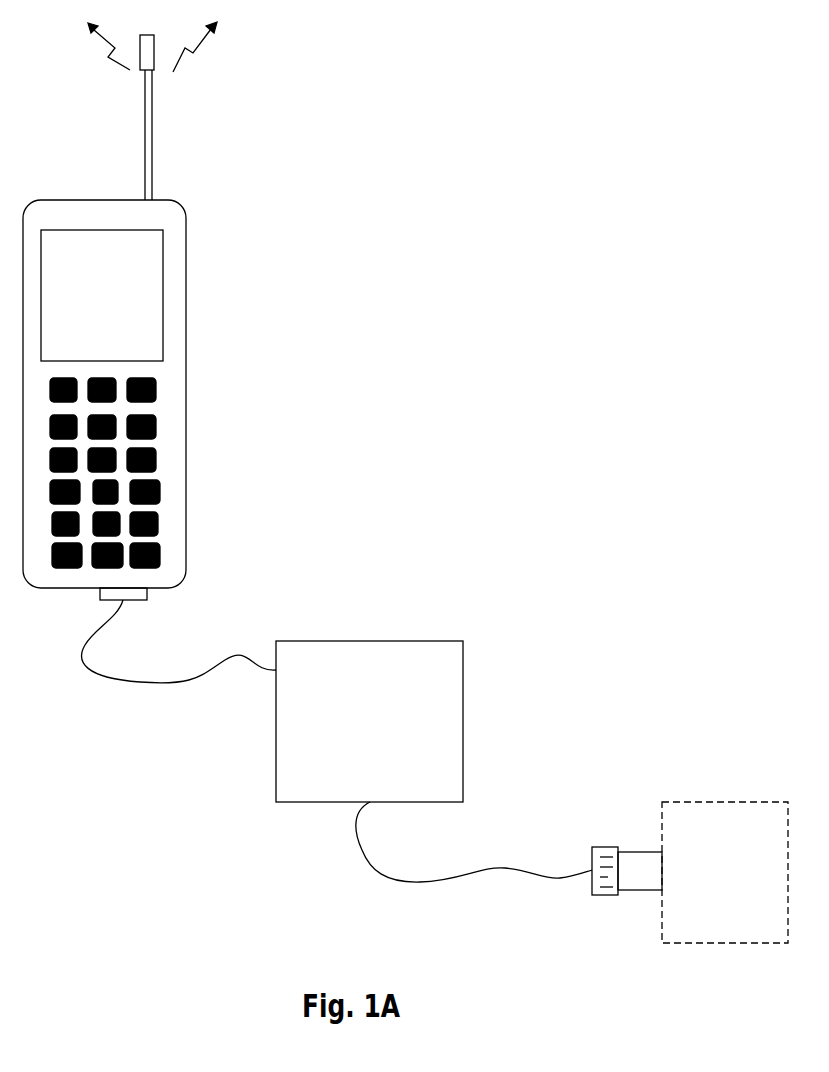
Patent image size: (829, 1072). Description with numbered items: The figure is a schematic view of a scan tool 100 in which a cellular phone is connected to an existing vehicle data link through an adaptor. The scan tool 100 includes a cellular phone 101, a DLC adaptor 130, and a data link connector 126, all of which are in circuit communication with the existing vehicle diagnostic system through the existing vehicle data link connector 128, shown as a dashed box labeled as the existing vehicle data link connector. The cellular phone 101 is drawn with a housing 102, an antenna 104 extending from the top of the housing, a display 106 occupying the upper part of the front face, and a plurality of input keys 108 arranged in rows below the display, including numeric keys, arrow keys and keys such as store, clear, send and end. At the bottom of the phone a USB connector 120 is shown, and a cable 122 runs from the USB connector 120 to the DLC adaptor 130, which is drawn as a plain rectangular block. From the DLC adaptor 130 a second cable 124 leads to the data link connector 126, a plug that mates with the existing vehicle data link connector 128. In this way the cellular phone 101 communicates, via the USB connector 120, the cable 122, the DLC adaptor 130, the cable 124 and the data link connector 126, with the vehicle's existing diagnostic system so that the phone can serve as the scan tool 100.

The scan tool 100 is at (413, 503).
The cellular phone 101 is at (156, 315).
The housing 102 is at (186, 370).
The antenna 104 is at (154, 133).
The display 106 is at (163, 323).
The input keys 108 is at (156, 426).
The USB connector 120 is at (147, 596).
The cable 122 is at (179, 665).
The cable 124 is at (362, 850).
The data link connector 126 is at (604, 847).
The existing vehicle data link connector 128 is at (660, 918).
The DLC adaptor 130 is at (463, 667).